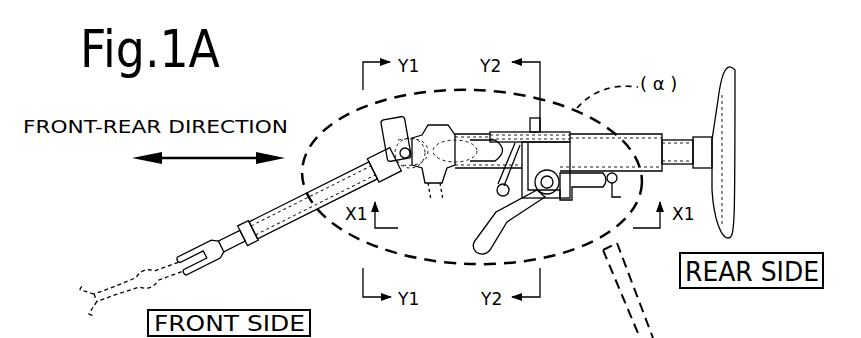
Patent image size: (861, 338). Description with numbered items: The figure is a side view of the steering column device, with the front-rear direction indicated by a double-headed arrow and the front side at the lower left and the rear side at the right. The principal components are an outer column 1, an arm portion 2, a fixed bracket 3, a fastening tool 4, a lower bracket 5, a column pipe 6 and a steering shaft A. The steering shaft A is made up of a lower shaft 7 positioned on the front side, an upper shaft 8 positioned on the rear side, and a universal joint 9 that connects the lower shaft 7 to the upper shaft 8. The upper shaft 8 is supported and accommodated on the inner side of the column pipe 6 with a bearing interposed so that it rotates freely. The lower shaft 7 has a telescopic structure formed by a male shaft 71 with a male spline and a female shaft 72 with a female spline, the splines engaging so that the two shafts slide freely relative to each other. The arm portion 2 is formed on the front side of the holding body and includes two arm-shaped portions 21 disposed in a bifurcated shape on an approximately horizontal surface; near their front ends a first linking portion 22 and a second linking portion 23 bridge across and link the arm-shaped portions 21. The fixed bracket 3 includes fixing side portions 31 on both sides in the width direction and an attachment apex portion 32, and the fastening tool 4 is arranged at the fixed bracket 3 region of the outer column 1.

The outer column 1 is at (564, 128).
The arm portion 2 is at (471, 133).
The fixed bracket 3 is at (580, 180).
The fastening tool 4 is at (532, 212).
The lower bracket 5 is at (397, 117).
The column pipe 6 is at (641, 135).
The lower shaft 7 is at (306, 225).
The upper shaft 8 is at (447, 183).
The universal joint 9 is at (422, 172).
The arm-shaped portion 21 is at (483, 162).
The first linking portion 22 is at (440, 125).
The second linking portion 23 is at (436, 185).
The fixing side portion 31 is at (574, 162).
The attachment apex portion 32 is at (540, 118).
The male shaft 71 is at (233, 233).
The female shaft 72 is at (280, 208).
The steering shaft A is at (283, 239).